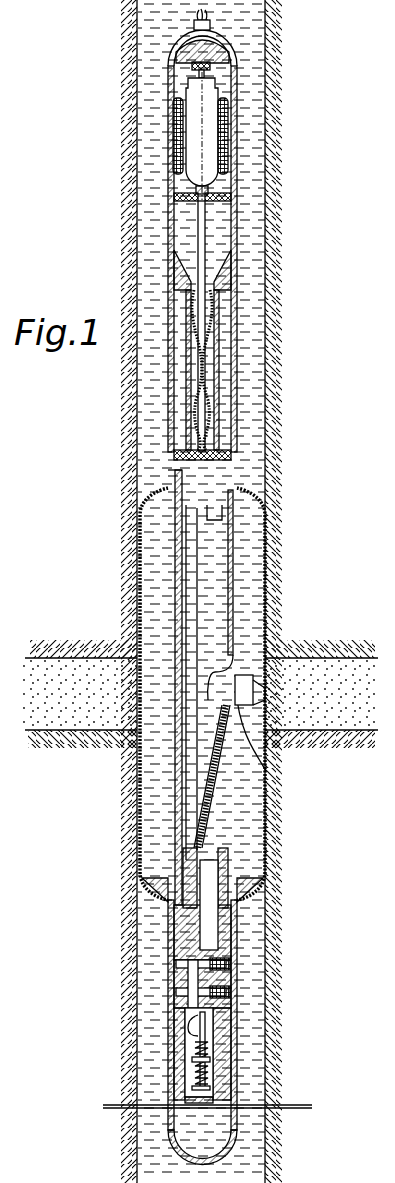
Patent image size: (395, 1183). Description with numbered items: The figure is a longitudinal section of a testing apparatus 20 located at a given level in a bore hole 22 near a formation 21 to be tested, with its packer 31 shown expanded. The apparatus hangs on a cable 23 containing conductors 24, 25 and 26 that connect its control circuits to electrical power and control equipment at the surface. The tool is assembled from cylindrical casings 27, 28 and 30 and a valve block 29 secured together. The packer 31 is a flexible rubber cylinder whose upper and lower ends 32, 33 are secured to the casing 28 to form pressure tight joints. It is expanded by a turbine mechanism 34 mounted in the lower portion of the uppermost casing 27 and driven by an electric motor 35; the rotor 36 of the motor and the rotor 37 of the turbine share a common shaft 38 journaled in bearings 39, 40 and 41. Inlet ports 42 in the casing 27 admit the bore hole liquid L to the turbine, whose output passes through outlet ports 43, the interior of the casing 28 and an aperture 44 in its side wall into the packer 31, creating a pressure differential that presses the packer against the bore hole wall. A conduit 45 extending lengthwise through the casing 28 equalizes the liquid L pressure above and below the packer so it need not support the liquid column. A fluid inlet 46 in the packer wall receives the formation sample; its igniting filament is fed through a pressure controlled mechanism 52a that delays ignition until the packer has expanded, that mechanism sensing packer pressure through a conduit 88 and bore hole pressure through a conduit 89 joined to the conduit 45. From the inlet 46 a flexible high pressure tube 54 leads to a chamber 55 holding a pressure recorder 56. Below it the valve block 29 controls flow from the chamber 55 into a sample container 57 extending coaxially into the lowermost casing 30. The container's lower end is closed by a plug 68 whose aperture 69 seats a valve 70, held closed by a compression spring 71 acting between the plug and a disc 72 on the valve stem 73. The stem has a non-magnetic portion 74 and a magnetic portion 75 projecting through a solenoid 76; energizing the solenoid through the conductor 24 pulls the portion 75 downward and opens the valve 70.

The testing apparatus 20 is at (158, 451).
The formation 21 is at (70, 676).
The bore hole 22 is at (170, 82).
The cable 23 is at (192, 32).
The conductor 24 is at (208, 19).
The conductor 25 is at (201, 14).
The conductor 26 is at (206, 15).
The cylindrical casing 27 is at (255, 86).
The cylindrical casing 28 is at (278, 573).
The valve block 29 is at (232, 974).
The cylindrical casing 30 is at (210, 1072).
The packer 31 is at (262, 487).
The upper end of packer 32 is at (236, 462).
The lower end of packer 33 is at (280, 915).
The turbine mechanism 34 is at (222, 345).
The electric motor 35 is at (172, 194).
The rotor of the motor 36 is at (212, 146).
The rotor of the turbine mechanism 37 is at (208, 386).
The common shaft 38 is at (262, 241).
The bearing 39 is at (172, 52).
The bearing 40 is at (172, 212).
The bearing 41 is at (168, 472).
The inlet ports 42 is at (172, 216).
The outlet ports 43 is at (278, 433).
The aperture 44 is at (228, 662).
The conduit 45 is at (182, 593).
The fluid inlet 46 is at (276, 772).
The pressure controlled mechanism 52a is at (202, 545).
The flexible high pressure tube 54 is at (218, 768).
The chamber 55 is at (182, 940).
The pressure recorder 56 is at (210, 932).
The sample container 57 is at (192, 1052).
The plug 68 is at (196, 1089).
The aperture 69 is at (196, 1074).
The valve 70 is at (203, 1097).
The compression spring 71 is at (198, 1058).
The disc 72 is at (292, 1034).
The valve stem 73 is at (200, 1062).
The non-magnetic portion 74 is at (233, 1010).
The magnetic portion 75 is at (172, 1015).
The solenoid 76 is at (292, 1034).
The conduit 88 is at (221, 516).
The conduit 89 is at (140, 555).
The liquid L is at (150, 133).